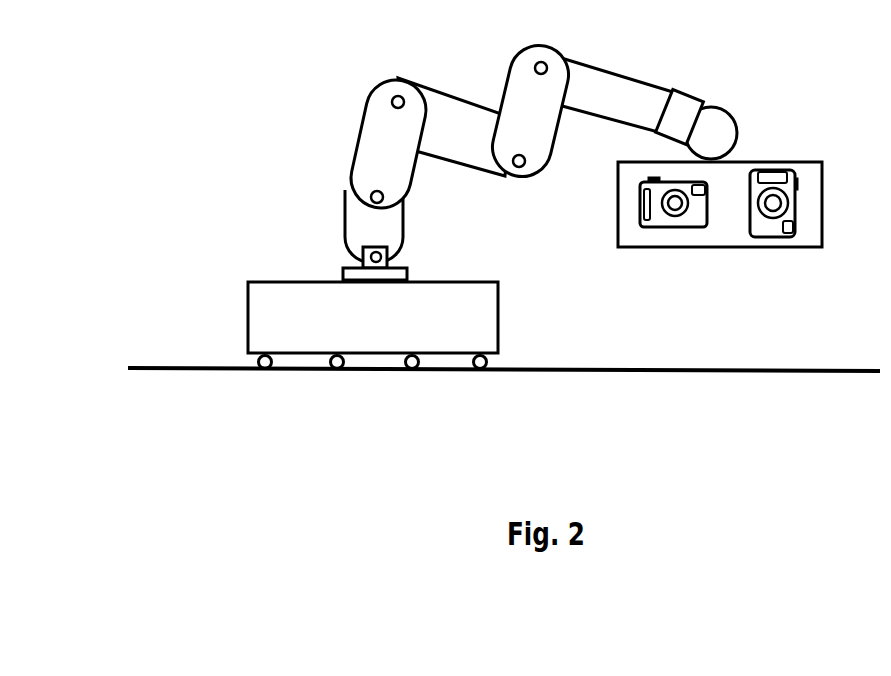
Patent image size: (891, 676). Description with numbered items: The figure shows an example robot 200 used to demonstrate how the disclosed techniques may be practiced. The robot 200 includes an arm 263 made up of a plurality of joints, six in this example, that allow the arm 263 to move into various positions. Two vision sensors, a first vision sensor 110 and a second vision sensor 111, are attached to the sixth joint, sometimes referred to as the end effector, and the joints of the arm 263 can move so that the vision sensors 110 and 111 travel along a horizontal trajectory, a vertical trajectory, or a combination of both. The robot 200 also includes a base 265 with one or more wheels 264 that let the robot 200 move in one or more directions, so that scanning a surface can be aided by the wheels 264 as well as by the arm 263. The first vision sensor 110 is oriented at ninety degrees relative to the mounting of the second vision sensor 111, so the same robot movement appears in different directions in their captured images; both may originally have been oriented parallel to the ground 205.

The robot 200 is at (220, 110).
The ground 205 is at (657, 368).
The arm 263 is at (625, 62).
The wheels 264 is at (473, 372).
The base 265 is at (475, 282).
The first vision sensor 110 is at (612, 210).
The second vision sensor 111 is at (778, 148).